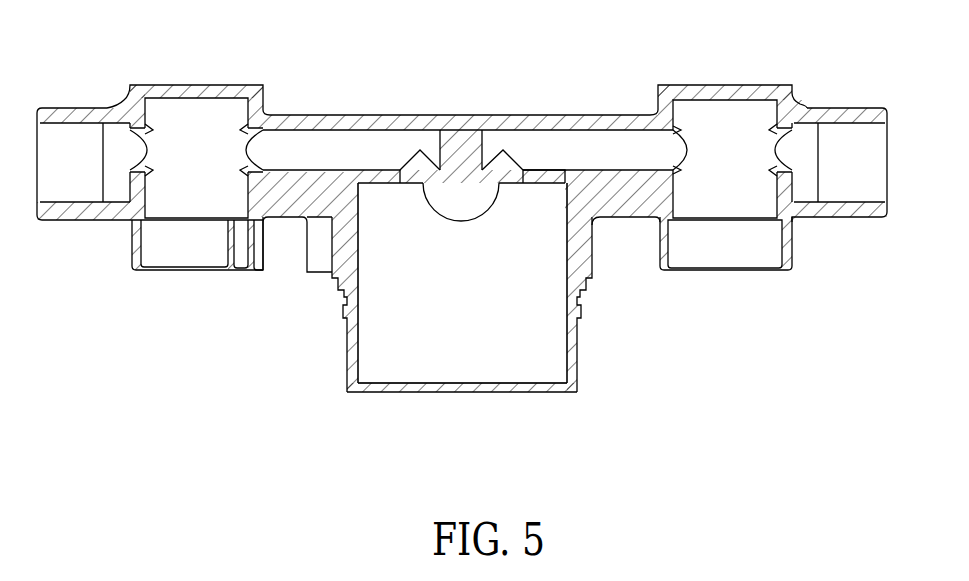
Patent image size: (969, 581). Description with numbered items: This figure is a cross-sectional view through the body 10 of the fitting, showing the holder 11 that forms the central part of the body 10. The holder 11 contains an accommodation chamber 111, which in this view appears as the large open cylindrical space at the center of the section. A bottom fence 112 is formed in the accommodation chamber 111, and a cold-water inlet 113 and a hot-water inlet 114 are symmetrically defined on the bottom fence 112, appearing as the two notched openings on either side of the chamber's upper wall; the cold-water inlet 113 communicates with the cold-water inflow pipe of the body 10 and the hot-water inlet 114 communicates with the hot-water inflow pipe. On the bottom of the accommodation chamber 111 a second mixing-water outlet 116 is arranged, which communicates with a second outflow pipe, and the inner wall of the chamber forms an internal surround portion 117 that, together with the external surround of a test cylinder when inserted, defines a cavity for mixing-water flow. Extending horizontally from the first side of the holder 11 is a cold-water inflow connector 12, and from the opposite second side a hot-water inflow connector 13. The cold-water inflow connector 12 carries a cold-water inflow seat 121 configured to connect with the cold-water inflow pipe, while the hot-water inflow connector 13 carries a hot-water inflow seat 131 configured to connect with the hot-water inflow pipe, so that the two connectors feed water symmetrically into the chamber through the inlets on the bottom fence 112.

The body 10 is at (512, 110).
The holder 11 is at (343, 298).
The accommodation chamber 111 is at (467, 358).
The bottom fence 112 is at (543, 183).
The cold-water inlet 113 is at (415, 173).
The hot-water inlet 114 is at (508, 172).
The second mixing-water outlet 116 is at (462, 197).
The internal surround portion 117 is at (358, 342).
The cold-water inflow connector 12 is at (283, 217).
The cold-water inflow seat 121 is at (72, 108).
The hot-water inflow connector 13 is at (638, 217).
The hot-water inflow seat 131 is at (833, 108).